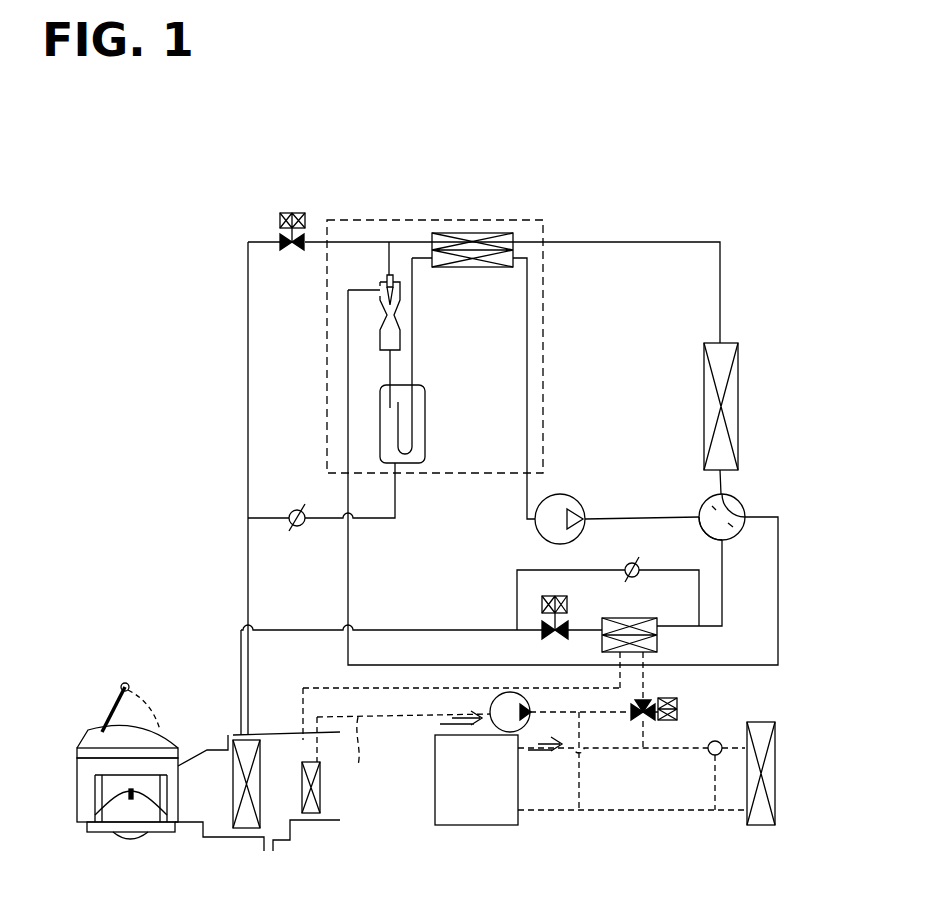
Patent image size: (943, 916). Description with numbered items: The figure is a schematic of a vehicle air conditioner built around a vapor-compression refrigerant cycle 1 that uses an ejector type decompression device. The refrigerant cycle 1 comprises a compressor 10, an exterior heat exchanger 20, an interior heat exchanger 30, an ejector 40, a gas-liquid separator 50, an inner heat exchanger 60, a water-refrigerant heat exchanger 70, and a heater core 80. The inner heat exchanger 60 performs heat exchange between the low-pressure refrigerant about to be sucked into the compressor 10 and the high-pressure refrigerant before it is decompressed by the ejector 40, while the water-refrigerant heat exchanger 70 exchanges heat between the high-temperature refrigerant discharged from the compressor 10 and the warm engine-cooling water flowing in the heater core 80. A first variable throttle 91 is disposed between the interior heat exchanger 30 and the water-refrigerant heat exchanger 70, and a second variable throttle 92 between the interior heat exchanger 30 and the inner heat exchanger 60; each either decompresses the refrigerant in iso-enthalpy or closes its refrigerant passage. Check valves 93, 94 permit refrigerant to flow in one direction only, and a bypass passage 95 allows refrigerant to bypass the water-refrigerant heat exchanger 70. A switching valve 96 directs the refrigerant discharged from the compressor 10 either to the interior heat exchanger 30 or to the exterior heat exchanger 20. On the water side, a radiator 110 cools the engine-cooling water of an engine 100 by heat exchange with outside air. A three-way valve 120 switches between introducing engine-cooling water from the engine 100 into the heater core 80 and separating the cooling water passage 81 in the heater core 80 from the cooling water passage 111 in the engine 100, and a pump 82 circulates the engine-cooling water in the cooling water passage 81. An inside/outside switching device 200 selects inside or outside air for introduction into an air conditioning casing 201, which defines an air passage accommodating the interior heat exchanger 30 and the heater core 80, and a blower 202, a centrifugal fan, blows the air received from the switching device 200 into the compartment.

The refrigerant cycle 1 is at (735, 235).
The compressor 10 is at (577, 497).
The exterior heat exchanger 20 is at (740, 412).
The interior heat exchanger 30 is at (233, 795).
The ejector 40 is at (400, 309).
The gas-liquid separator 50 is at (425, 424).
The inner heat exchanger 60 is at (466, 233).
The water-refrigerant heat exchanger 70 is at (660, 646).
The heater core 80 is at (321, 796).
The cooling water passage 81 is at (524, 749).
The pump 82 is at (495, 704).
The first variable throttle 91 is at (545, 640).
The second variable throttle 92 is at (280, 243).
The check valve 93 is at (641, 563).
The check valve 94 is at (297, 508).
The bypass passage 95 is at (580, 570).
The switching valve 96 is at (746, 502).
The engine 100 is at (478, 826).
The radiator 110 is at (762, 826).
The cooling water passage 111 is at (633, 812).
The three-way valve 120 is at (651, 700).
The inside/outside switching device 200 is at (97, 720).
The air conditioning casing 201 is at (282, 731).
The blower 202 is at (88, 828).